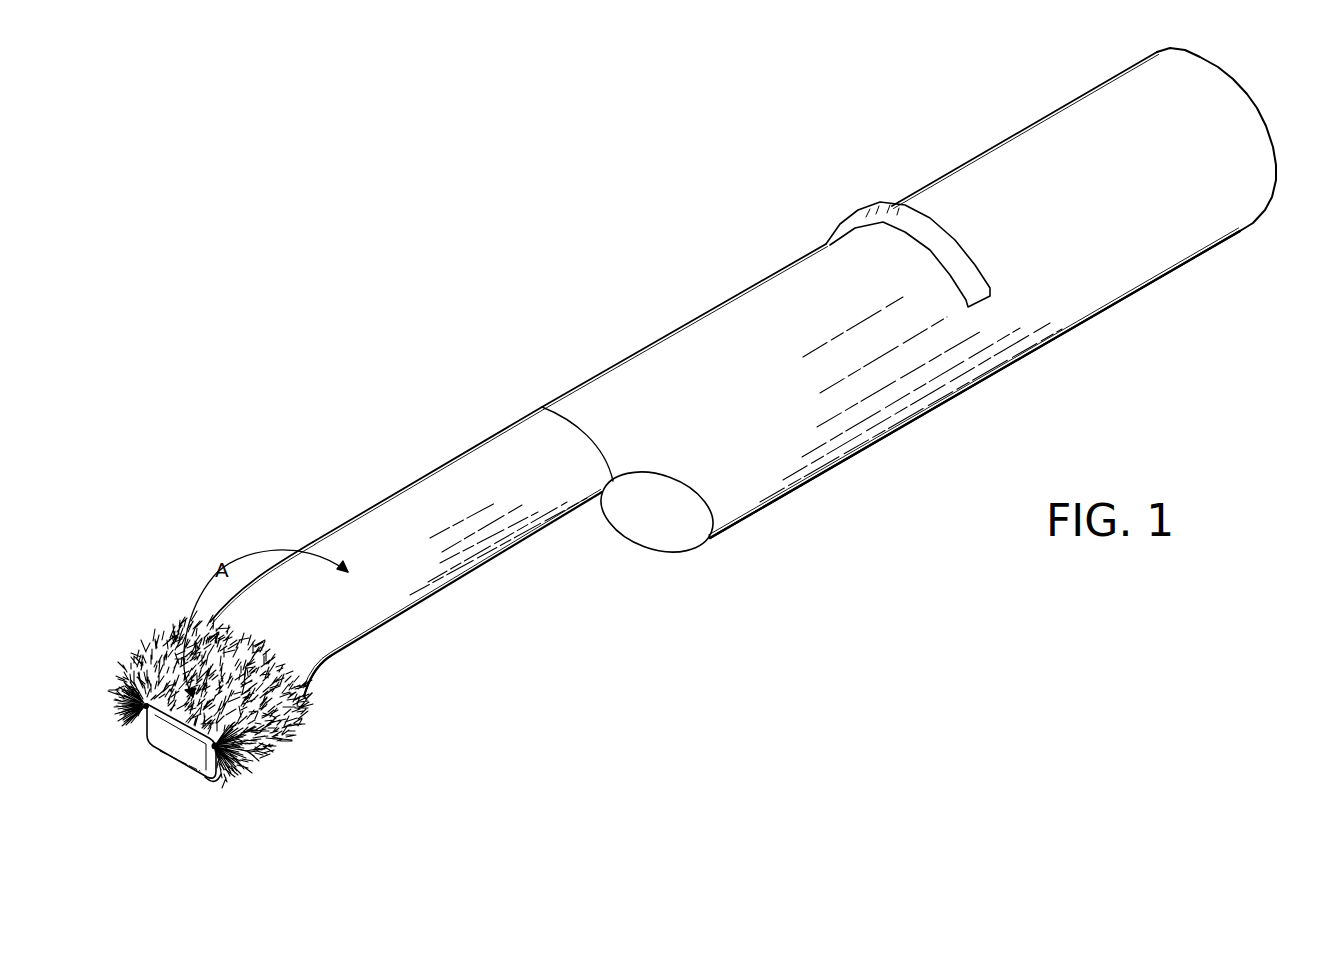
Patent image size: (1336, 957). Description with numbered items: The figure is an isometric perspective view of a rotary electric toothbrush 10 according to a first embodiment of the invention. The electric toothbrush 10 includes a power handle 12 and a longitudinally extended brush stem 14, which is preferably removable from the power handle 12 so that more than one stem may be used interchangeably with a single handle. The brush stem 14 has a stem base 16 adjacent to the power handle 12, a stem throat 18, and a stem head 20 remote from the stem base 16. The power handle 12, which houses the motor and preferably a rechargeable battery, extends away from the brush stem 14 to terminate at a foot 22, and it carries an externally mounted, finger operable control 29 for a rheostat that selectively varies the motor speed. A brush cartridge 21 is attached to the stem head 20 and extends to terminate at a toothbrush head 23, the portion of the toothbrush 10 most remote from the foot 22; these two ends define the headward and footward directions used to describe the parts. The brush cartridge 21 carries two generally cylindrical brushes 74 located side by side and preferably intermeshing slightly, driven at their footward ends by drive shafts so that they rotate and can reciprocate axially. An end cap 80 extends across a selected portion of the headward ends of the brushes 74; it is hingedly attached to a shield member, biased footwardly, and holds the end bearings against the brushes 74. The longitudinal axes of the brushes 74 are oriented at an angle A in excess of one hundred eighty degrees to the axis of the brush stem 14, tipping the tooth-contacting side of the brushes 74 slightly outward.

The electric toothbrush 10 is at (787, 498).
The power handle 12 is at (762, 281).
The brush stem 14 is at (432, 470).
The stem base 16 is at (513, 423).
The stem throat 18 is at (528, 538).
The stem head 20 is at (311, 688).
The brush cartridge 21 is at (133, 673).
The foot 22 is at (1227, 71).
The toothbrush head 23 is at (216, 788).
The finger operable control 29 is at (862, 213).
The cylindrical brushes 74 is at (167, 640).
The end cap 80 is at (173, 759).